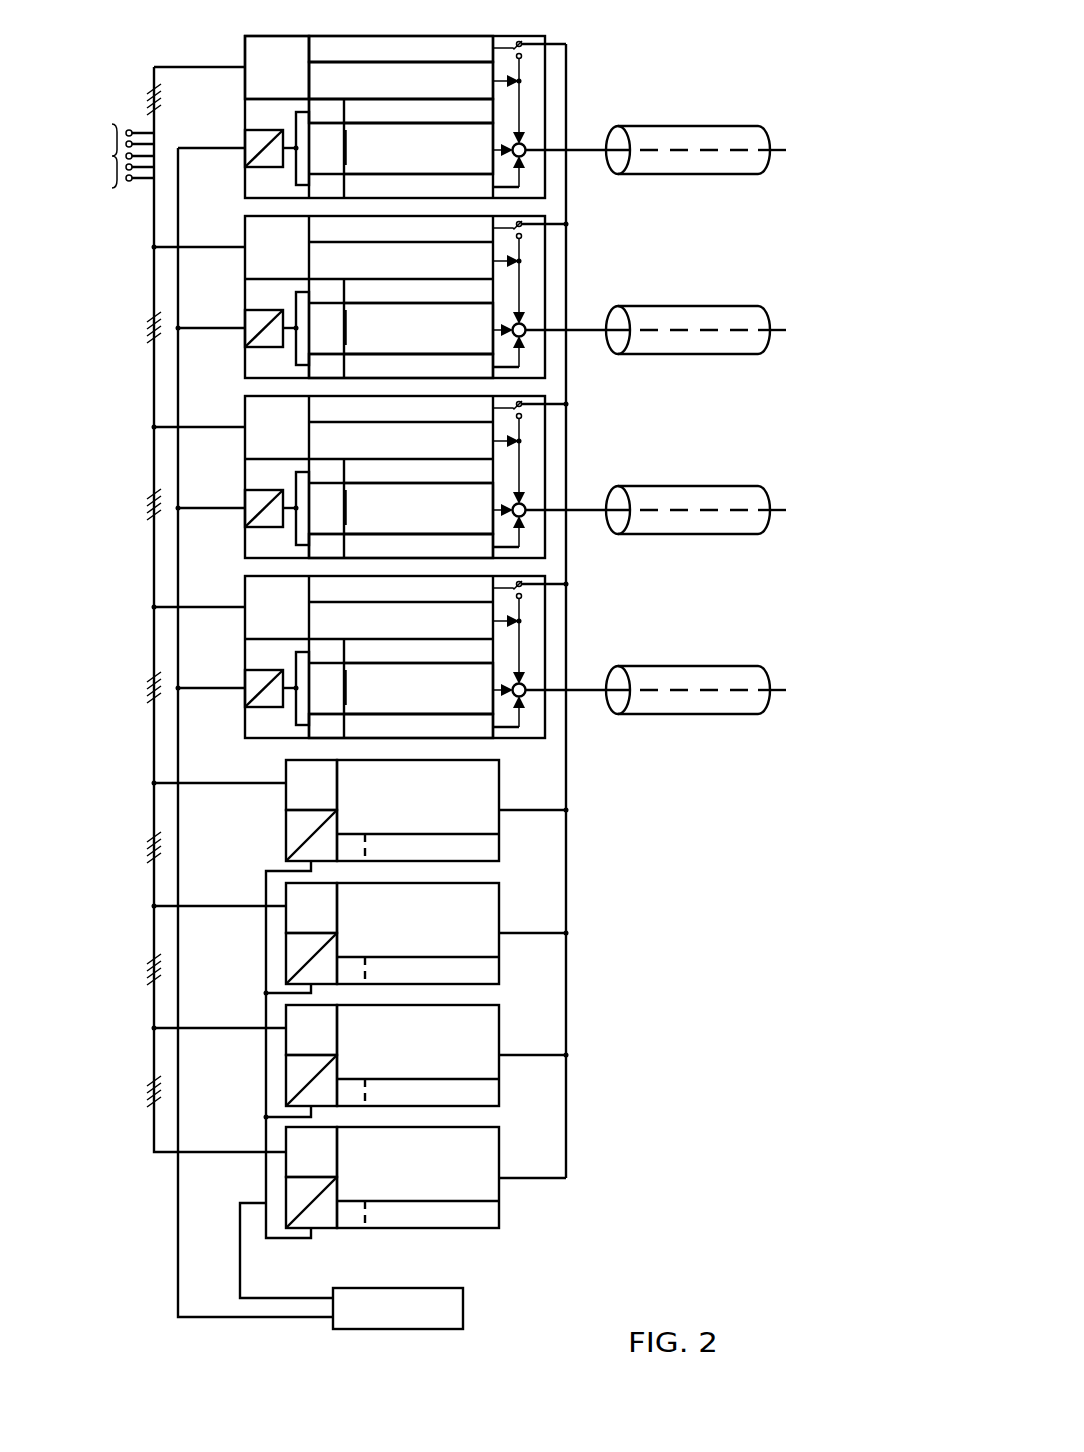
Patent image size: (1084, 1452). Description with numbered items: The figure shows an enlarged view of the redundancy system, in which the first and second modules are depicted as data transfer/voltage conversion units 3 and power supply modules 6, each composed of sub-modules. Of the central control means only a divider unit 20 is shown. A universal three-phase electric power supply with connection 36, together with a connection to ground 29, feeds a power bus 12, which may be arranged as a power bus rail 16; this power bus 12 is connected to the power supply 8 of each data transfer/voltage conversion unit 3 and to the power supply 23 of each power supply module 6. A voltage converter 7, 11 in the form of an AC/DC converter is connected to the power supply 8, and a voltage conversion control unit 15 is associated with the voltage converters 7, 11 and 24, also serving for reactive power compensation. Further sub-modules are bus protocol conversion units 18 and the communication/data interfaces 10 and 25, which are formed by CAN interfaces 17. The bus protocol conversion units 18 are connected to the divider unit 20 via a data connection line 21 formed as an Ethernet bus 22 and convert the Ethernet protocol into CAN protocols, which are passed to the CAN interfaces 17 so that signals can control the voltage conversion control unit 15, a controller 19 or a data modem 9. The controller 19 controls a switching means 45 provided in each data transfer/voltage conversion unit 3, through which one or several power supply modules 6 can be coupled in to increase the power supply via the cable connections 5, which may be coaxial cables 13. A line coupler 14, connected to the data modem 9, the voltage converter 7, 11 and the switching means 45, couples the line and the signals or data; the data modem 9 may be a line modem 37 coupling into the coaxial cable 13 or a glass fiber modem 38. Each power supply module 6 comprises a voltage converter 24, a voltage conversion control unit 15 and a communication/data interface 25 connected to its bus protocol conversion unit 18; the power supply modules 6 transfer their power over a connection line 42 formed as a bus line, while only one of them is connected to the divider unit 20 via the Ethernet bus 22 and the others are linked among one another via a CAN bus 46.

The data transfer/voltage conversion unit 3 is at (470, 116).
The cable connection 5 is at (656, 121).
The power supply module 6 is at (379, 1019).
The voltage converter 7 is at (401, 49).
The power supply 8 is at (287, 81).
The data modem 9 is at (429, 165).
The communication/data interface 10 is at (335, 165).
The supply line 11 is at (430, 80).
The power bus 12 is at (173, 609).
The coaxial cable 13 is at (710, 135).
The line coupler 14 is at (526, 147).
The voltage conversion control unit 15 is at (365, 108).
The power bus rail 16 is at (154, 381).
The CAN interface 17 is at (330, 107).
The bus protocol conversion unit 18 is at (236, 136).
The controller 19 is at (388, 48).
The divider unit 20 is at (463, 1310).
The data connection line 21 is at (255, 733).
The Ethernet bus 22 is at (270, 1318).
The power supply 23 is at (324, 801).
The voltage converter 24 is at (430, 810).
The communication/data interface 25 is at (352, 1222).
The connection to ground 29 is at (140, 182).
The connection 36 is at (113, 184).
The line modem 37 is at (433, 345).
The glass fiber modem 38 is at (372, 372).
The connection line 42 is at (567, 795).
The switching means 45 is at (533, 50).
The CAN bus 46 is at (266, 1106).